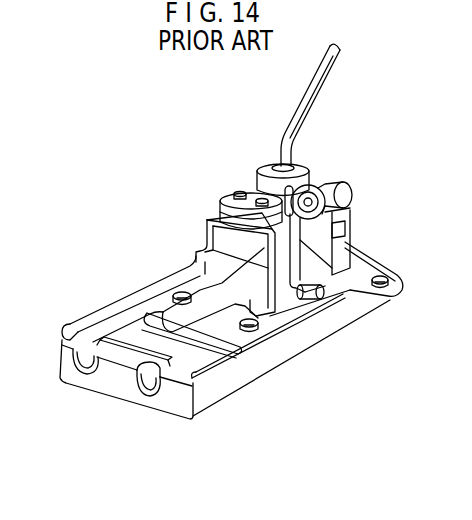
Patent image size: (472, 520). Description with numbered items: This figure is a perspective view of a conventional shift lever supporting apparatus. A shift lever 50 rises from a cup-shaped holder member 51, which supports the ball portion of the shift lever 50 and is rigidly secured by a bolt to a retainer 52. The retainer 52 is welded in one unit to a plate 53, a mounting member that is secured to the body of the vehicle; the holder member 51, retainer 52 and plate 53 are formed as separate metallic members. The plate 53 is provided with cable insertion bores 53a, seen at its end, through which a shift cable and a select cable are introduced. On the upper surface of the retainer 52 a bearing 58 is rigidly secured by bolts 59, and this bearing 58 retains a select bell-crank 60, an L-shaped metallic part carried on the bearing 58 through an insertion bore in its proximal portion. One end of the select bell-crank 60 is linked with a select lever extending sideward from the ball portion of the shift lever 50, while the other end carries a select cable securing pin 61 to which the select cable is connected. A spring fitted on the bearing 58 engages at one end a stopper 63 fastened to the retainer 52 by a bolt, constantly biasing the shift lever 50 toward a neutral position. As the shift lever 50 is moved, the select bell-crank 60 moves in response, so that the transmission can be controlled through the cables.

The shift lever 50 is at (329, 68).
The cup-shaped holder member 51 is at (302, 171).
The retainer 52 is at (206, 222).
The plate 53 is at (262, 354).
The cable insertion bores 53a is at (150, 383).
The bearing 58 is at (236, 198).
The bolts 59 is at (259, 199).
The select bell-crank 60 is at (288, 260).
The select cable securing pin 61 is at (306, 304).
The stopper 63 is at (350, 245).